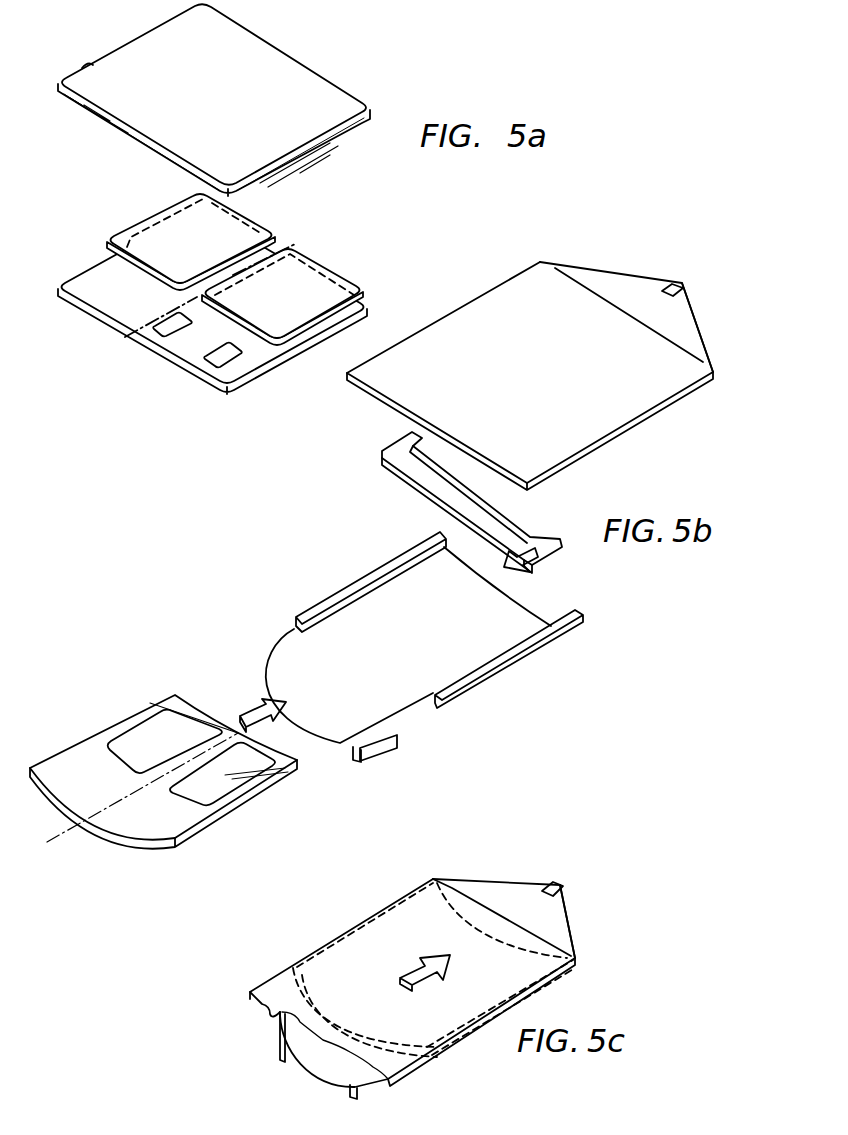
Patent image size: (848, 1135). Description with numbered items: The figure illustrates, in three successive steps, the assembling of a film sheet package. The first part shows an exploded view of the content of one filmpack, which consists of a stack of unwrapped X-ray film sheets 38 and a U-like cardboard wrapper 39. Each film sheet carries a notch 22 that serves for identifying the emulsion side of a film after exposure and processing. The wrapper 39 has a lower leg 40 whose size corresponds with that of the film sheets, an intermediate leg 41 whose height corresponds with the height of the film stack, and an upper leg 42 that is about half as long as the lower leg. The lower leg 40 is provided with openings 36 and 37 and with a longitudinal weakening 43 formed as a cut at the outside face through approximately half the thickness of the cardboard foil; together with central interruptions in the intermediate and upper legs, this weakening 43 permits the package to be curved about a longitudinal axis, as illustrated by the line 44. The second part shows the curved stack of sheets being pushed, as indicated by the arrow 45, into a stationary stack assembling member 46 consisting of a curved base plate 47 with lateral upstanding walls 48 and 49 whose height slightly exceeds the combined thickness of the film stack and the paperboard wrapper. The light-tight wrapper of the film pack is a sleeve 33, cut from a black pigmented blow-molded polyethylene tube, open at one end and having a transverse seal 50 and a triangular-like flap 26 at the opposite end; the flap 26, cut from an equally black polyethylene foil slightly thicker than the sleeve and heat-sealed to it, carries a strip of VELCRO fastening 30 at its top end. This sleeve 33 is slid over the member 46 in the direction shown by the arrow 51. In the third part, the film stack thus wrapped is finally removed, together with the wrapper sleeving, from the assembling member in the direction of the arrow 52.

In FIG. 5a, the notch 22 is at (82, 68).
In FIG. 5a, the stack of unwrapped X-ray film sheets 38 is at (298, 45).
In FIG. 5a, the lower leg 40 is at (257, 367).
In FIG. 5a, the intermediate leg 41 is at (262, 228).
In FIG. 5a, the upper leg 42 is at (127, 247).
In FIG. 5a, the longitudinal weakening 43 is at (130, 322).
In FIG. 5a, the U-like cardboard wrapper 39 is at (322, 254).
In FIG. 5a, the opening 37 is at (160, 330).
In FIG. 5a, the opening 36 is at (215, 365).
In FIG. 5b, the light-tight wrapper sleeve 33 is at (610, 423).
In FIG. 5c, the light-tight wrapper sleeve 33 is at (275, 983).
In FIG. 5b, the triangular-like flap 26 is at (598, 280).
In FIG. 5c, the triangular-like flap 26 is at (558, 916).
In FIG. 5b, the VELCRO fastening strip 30 is at (675, 283).
In FIG. 5c, the VELCRO fastening strip 30 is at (563, 886).
In FIG. 5b, the transverse seal 50 is at (653, 333).
In FIG. 5b, the arrow 51 is at (467, 493).
In FIG. 5b, the stationary stack assembling member 46 is at (419, 646).
In FIG. 5b, the curved base plate 47 is at (342, 727).
In FIG. 5c, the curved base plate 47 is at (302, 1063).
In FIG. 5b, the lateral upstanding wall 48 is at (372, 572).
In FIG. 5b, the lateral upstanding wall 49 is at (500, 670).
In FIG. 5b, the arrow 45 is at (243, 713).
In FIG. 5b, the line 44 is at (47, 842).
In FIG. 5c, the arrow 52 is at (412, 970).